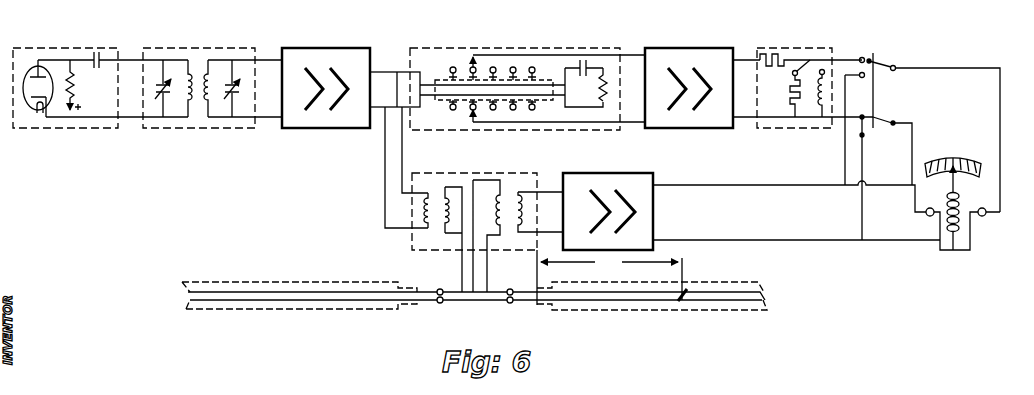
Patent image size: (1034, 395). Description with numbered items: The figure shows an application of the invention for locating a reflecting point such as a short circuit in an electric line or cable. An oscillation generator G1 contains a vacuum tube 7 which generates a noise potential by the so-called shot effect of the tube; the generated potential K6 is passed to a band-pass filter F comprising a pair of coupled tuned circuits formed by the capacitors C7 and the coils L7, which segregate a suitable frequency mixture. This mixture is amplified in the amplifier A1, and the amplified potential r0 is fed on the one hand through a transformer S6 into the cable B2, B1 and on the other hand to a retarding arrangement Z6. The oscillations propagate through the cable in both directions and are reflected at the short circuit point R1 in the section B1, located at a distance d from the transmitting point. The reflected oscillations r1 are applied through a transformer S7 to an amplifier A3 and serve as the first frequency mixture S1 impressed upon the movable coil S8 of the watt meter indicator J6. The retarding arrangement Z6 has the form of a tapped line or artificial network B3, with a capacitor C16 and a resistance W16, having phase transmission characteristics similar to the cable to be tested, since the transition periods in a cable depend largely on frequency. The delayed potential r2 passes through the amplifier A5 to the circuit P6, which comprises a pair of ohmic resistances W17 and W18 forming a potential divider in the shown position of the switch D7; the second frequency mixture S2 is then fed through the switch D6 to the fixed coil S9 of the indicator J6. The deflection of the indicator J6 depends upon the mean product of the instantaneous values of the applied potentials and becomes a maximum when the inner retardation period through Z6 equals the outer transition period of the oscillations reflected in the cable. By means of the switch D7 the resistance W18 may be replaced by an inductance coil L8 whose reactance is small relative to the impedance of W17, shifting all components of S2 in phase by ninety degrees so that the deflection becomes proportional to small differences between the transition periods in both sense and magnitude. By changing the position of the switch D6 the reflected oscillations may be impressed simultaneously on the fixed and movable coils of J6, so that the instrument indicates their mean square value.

The tube (partial label) 7 is at (28, 88).
The oscillation generator G1 is at (62, 125).
The coupling K6 is at (137, 87).
The filter F is at (212, 89).
The tuned circuit capacitor C7 is at (198, 88).
The tuned circuit coil L7 is at (186, 100).
The reflected oscillations r1 is at (278, 87).
The amplifier A1 is at (303, 48).
The amplified potential r0 is at (392, 96).
The retarding arrangement Z6 is at (527, 88).
The artificial network B3 is at (447, 77).
The capacitor C16 is at (582, 78).
The resistor W16 is at (596, 108).
The delayed potential r2 is at (640, 87).
The amplifier A5 is at (672, 48).
The circuit P6 is at (809, 89).
The ohmic resistance W17 is at (773, 53).
The switch D7 is at (812, 58).
The ohmic resistance W18 is at (781, 96).
The inductance coil L8 is at (826, 78).
The switch D6 is at (888, 73).
The second frequency mixture S2 is at (950, 82).
The first frequency mixture S1 is at (900, 212).
The fixed coil S9 is at (984, 215).
The watt meter indicator J6 is at (954, 179).
The movable coil S8 is at (953, 252).
The transformer S6 is at (444, 226).
The transformer S7 is at (508, 226).
The amplifier A3 is at (600, 174).
The distance d is at (609, 277).
The cable section B2 is at (372, 302).
The cable section B1 is at (578, 302).
The short circuit point R1 is at (686, 302).